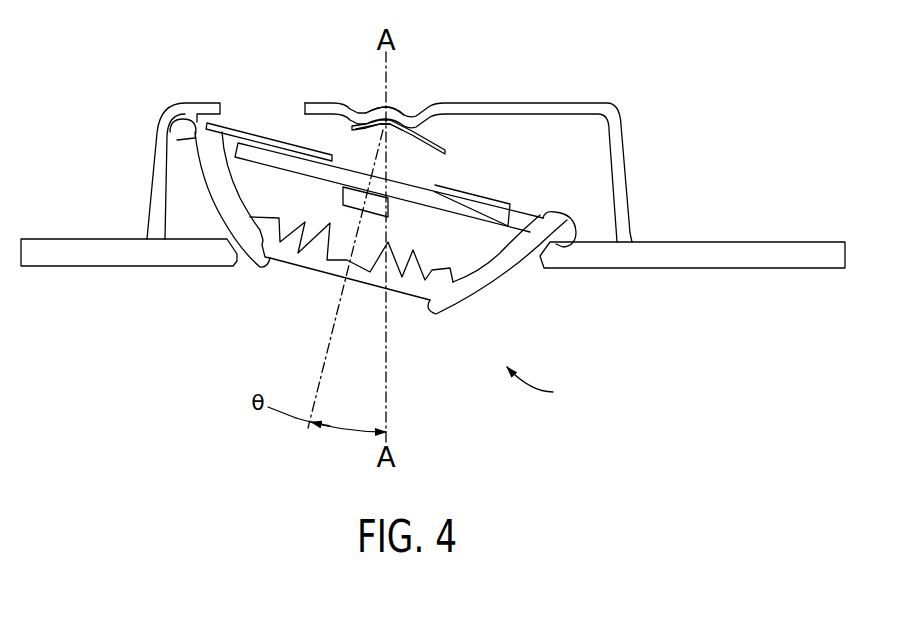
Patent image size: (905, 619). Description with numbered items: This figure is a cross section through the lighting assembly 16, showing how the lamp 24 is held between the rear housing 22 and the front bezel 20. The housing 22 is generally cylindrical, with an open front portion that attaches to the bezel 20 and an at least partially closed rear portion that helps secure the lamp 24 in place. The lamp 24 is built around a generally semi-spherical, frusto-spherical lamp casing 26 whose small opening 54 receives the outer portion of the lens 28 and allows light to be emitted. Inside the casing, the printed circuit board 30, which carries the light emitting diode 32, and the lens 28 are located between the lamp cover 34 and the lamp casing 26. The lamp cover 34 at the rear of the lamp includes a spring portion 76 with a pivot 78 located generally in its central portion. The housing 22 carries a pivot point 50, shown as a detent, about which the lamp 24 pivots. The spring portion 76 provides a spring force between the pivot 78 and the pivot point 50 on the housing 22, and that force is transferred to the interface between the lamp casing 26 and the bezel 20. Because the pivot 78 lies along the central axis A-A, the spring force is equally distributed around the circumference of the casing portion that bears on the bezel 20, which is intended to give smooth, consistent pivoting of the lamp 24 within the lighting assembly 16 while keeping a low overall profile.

The lighting assembly 16 is at (650, 86).
The bezel 20 is at (734, 256).
The housing 22 is at (568, 112).
The lamp 24 is at (546, 386).
The lamp casing 26 is at (494, 278).
The lens 28 is at (310, 262).
The printed circuit board 30 is at (410, 200).
The light emitting diode 32 is at (345, 198).
The lamp cover 34 is at (268, 140).
The pivot point 50 is at (368, 118).
The small opening 54 is at (181, 132).
The spring portion 76 is at (412, 141).
The pivot 78 is at (383, 131).